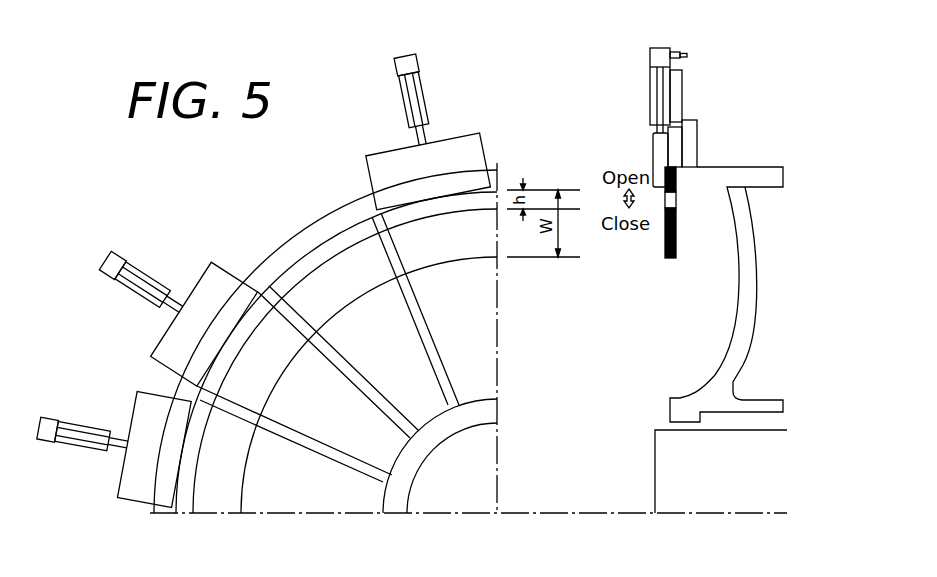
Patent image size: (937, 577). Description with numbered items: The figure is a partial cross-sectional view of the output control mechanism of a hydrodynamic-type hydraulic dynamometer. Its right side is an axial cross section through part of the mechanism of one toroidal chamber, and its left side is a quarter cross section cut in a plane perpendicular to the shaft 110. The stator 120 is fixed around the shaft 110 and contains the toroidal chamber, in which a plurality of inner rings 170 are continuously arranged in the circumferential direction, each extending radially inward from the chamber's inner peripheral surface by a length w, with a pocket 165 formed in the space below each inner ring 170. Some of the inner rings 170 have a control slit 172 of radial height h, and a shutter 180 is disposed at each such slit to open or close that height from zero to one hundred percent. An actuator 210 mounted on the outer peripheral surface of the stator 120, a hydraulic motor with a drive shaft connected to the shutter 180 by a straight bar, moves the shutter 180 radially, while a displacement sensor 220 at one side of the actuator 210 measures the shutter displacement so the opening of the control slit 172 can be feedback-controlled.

The shaft 110 is at (758, 490).
The stator 120 is at (733, 241).
The pocket 165 is at (465, 331).
The inner ring 170 is at (438, 245).
The control slit 172 is at (438, 205).
The shutter 180 is at (463, 157).
The actuator 210 is at (425, 98).
The displacement sensor 220 is at (677, 87).